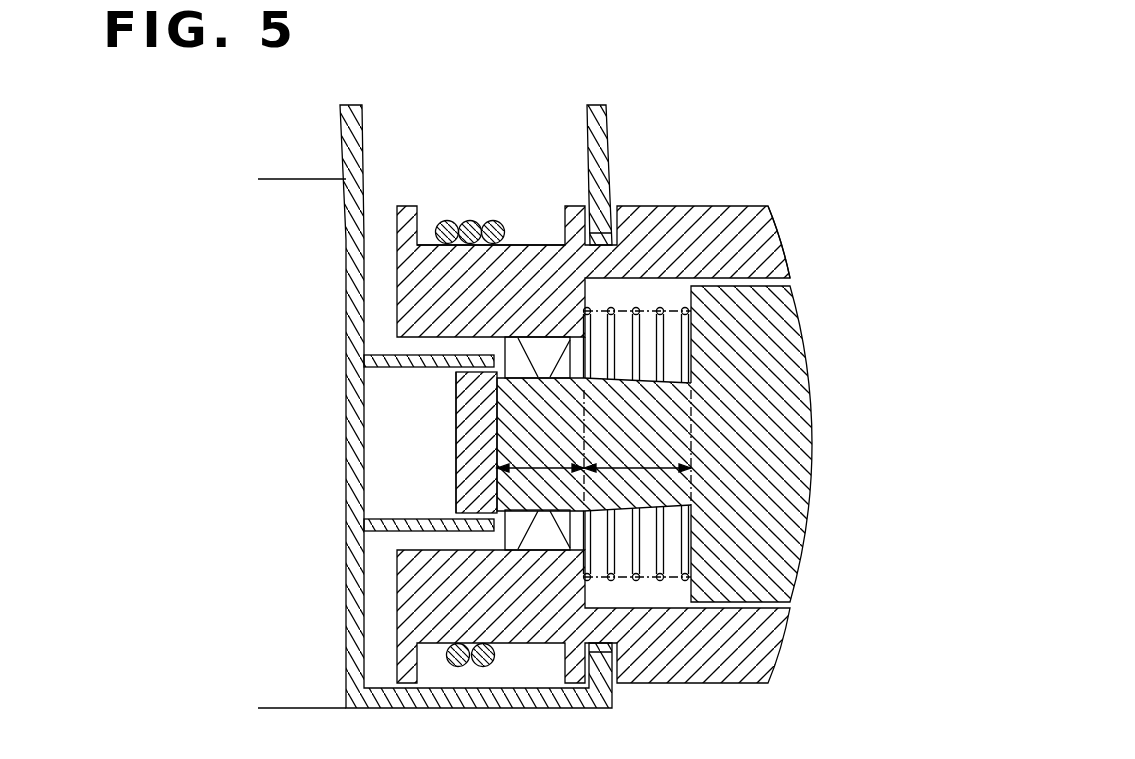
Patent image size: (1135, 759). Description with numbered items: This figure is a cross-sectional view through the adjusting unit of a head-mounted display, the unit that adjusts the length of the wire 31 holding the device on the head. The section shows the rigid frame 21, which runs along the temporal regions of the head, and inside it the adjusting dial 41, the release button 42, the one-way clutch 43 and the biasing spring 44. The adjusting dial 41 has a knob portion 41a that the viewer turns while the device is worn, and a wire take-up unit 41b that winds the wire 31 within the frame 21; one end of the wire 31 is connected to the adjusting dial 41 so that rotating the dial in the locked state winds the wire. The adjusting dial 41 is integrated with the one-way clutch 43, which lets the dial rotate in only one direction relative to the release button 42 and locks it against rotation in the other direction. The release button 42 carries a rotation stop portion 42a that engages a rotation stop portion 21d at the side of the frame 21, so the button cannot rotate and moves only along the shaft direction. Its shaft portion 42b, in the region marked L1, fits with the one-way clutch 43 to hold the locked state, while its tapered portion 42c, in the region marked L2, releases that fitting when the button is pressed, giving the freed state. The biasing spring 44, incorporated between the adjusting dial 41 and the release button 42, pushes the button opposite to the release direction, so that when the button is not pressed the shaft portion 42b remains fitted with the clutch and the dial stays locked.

The frame 21 is at (587, 127).
The rotation stop portion 21d is at (388, 393).
The wire 31 is at (440, 233).
The adjusting dial 41 is at (606, 381).
The knob portion 41a is at (747, 213).
The wire take-up unit 41b is at (518, 243).
The release button 42 is at (582, 521).
The rotation stop portion 42a is at (468, 494).
The shaft portion 42b is at (458, 467).
The tapered portion 42c is at (686, 465).
The one-way clutch 43 is at (520, 538).
The biasing spring 44 is at (650, 580).